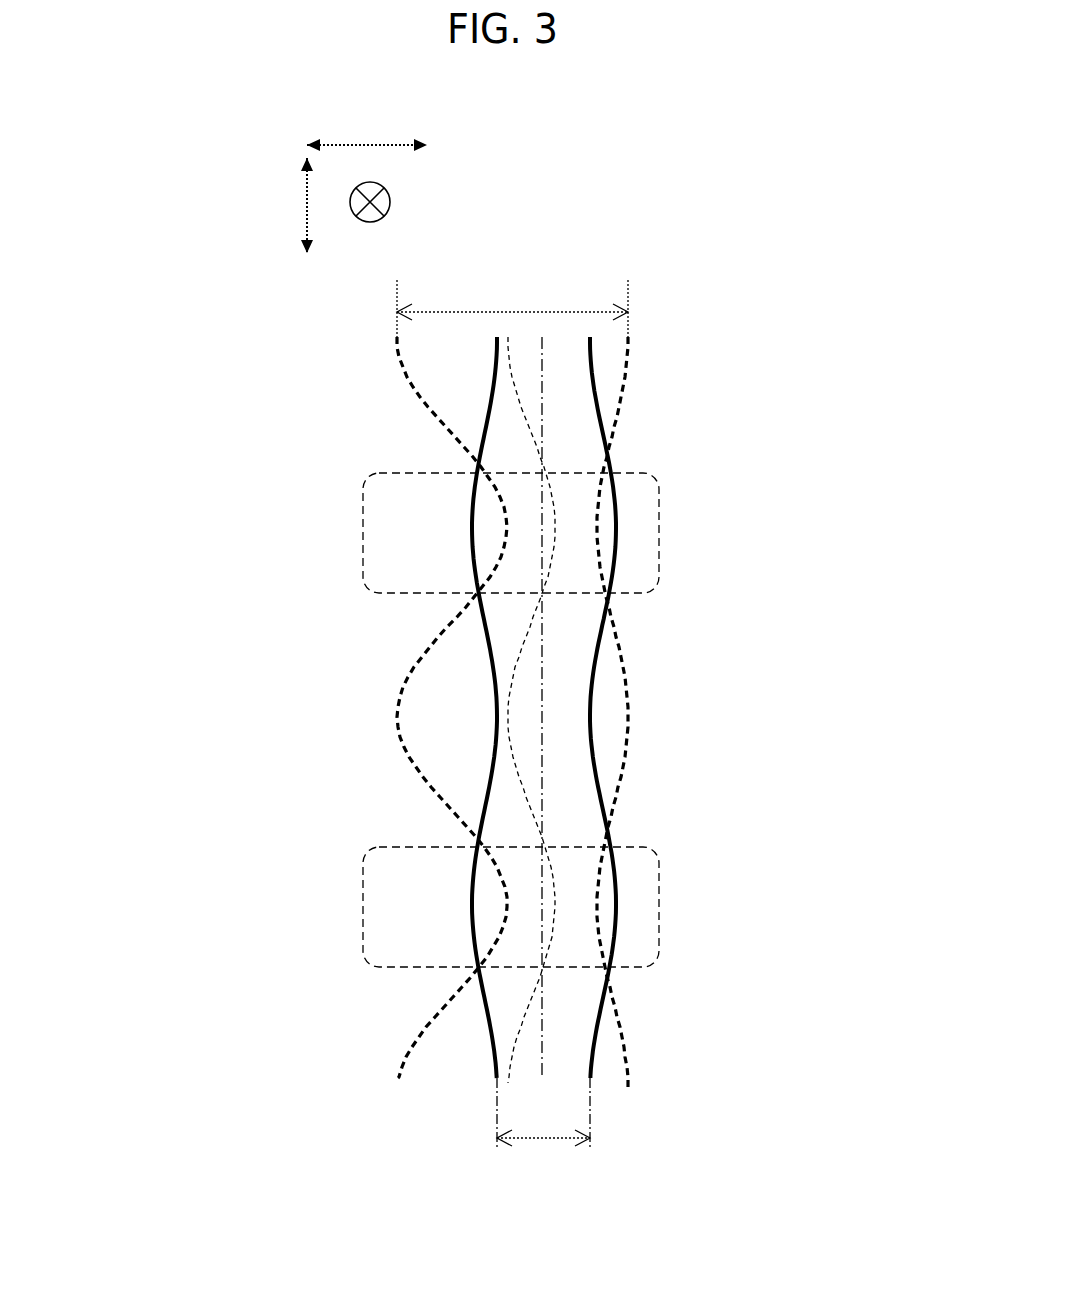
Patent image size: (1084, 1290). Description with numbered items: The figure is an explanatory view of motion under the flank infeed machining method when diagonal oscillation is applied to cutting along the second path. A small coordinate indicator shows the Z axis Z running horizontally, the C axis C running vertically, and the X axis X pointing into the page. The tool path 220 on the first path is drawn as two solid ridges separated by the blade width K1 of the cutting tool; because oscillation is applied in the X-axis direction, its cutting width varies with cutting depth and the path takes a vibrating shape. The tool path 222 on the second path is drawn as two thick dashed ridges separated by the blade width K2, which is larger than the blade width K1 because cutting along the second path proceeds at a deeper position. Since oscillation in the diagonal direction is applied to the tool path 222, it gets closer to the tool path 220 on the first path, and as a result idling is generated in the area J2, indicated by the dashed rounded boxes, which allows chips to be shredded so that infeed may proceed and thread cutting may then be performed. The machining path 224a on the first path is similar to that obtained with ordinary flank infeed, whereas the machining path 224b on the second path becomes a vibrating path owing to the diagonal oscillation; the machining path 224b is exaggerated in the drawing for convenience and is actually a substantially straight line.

The tool path on the first path 220 is at (478, 462).
The tool path on the second path 222 is at (618, 422).
The machining path on the first path 224a is at (543, 793).
The machining path on the second path 224b is at (508, 720).
The area where idling is generated J2 is at (363, 530).
The blade width K1 is at (540, 1140).
The blade width K2 is at (485, 312).
The Z axis Z is at (345, 145).
The C axis C is at (307, 208).
The X axis X is at (390, 203).